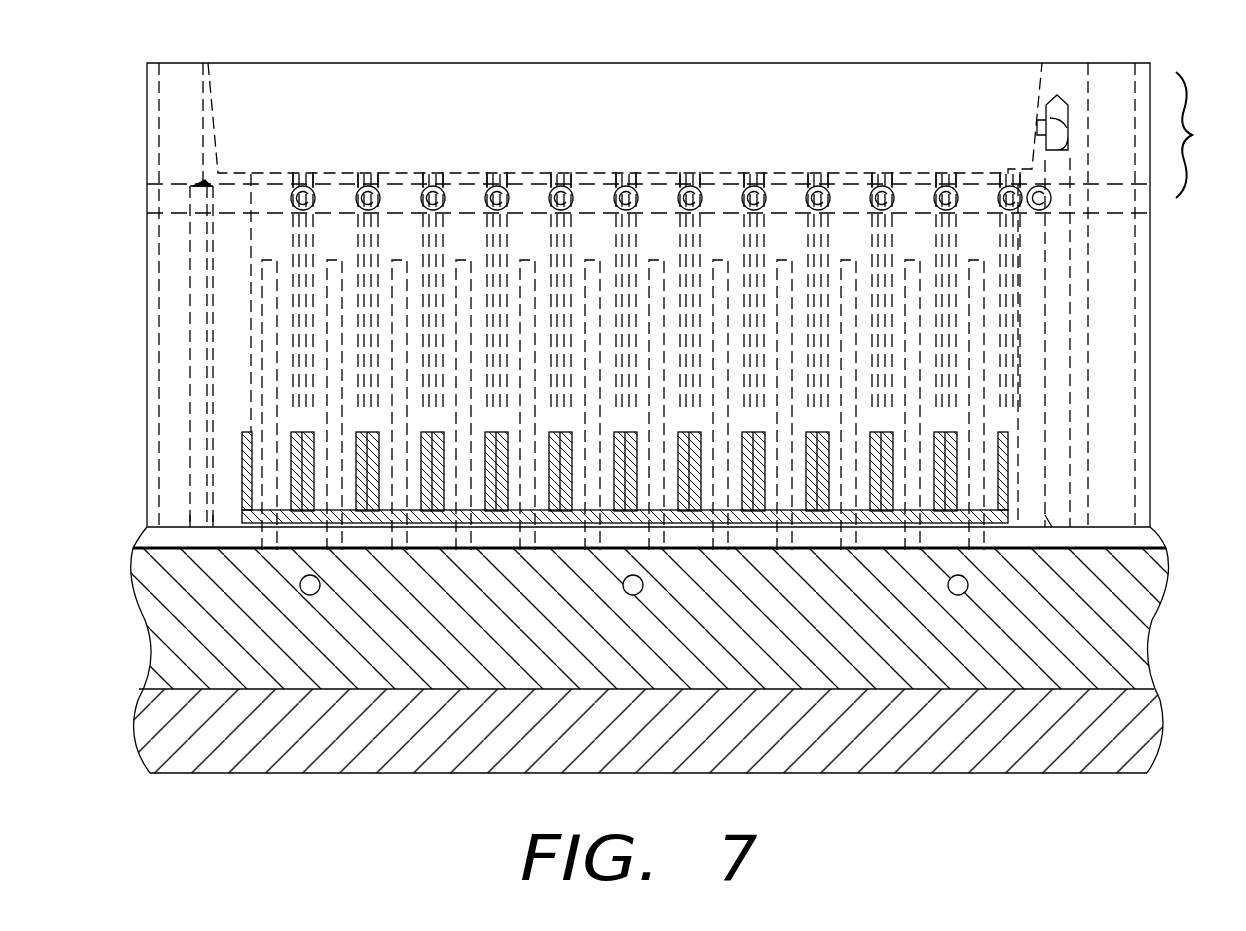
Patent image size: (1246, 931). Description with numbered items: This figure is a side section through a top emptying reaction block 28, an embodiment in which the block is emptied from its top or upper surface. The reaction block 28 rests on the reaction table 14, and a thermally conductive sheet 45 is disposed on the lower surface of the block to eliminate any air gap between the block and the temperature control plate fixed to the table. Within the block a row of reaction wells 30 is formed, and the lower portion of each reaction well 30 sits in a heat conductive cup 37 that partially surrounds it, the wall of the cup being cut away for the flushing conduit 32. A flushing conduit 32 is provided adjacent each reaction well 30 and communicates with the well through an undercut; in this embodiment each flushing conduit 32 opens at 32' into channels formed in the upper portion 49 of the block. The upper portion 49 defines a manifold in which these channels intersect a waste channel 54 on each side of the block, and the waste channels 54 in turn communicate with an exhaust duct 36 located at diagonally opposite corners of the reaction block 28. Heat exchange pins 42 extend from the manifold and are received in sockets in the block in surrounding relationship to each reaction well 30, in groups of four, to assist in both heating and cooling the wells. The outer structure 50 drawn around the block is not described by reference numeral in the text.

The reaction table 14 is at (147, 725).
The reaction block 28 is at (147, 272).
The reaction wells 30 is at (253, 240).
The flushing conduit 32 is at (656, 273).
The flushing conduit opening 32' is at (671, 172).
The exhaust duct 36 is at (177, 213).
The heat conductive cup 37 is at (243, 480).
The heat exchange pins 42 is at (265, 355).
The thermally conductive sheet 45 is at (138, 555).
The upper portion 49 is at (1204, 135).
The housing 50 is at (147, 128).
The waste channel 54 is at (460, 195).